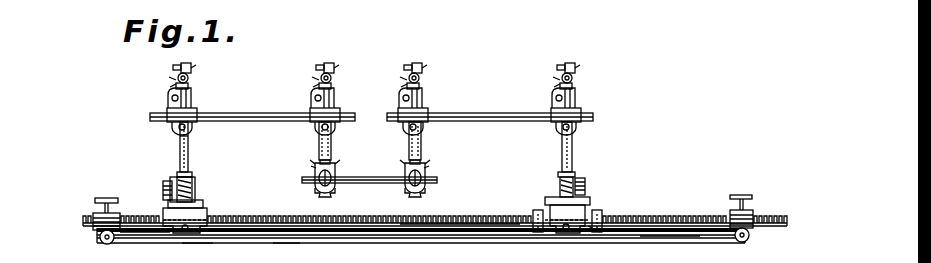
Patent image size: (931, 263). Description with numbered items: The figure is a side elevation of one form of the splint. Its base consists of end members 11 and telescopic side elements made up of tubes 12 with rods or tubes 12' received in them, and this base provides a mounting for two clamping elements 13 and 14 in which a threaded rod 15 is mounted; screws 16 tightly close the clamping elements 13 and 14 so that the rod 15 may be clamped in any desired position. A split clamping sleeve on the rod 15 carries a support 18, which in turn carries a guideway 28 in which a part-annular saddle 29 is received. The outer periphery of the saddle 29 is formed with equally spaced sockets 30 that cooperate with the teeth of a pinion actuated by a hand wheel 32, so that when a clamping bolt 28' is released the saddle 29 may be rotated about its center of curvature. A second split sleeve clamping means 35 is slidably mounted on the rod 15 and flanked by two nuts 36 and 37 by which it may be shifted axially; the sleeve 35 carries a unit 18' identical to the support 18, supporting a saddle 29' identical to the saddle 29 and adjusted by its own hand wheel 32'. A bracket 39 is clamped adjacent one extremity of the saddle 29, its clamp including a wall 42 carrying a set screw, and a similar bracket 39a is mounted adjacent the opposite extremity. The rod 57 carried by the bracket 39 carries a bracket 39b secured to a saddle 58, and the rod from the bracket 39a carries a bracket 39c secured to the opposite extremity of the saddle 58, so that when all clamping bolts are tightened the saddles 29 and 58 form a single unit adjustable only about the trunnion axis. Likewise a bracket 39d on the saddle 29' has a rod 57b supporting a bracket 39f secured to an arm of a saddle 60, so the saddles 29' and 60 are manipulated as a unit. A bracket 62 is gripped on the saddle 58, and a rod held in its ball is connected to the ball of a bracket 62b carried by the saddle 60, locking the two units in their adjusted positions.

The end members 11 is at (100, 242).
The tubes 12 is at (420, 247).
The rods or tubes 12' is at (670, 249).
The clamping element 13 is at (95, 212).
The clamping element 14 is at (203, 217).
The threaded rod 15 is at (487, 215).
The screws 16 is at (106, 197).
The support 18 is at (200, 202).
The unit 18' is at (587, 202).
The guideway 28 is at (205, 181).
The clamping bolt 28' is at (596, 166).
The part-annular saddle 29 is at (200, 147).
The saddle 29' is at (583, 147).
The sockets 30 is at (180, 141).
The hand wheel 32 is at (152, 188).
The hand wheel 32' is at (600, 178).
The split sleeve clamping means 35 is at (584, 231).
The nut 36 is at (537, 233).
The nut 37 is at (600, 232).
The bracket 39 is at (201, 79).
The bracket 39a is at (197, 253).
The bracket 39b is at (308, 74).
The bracket 39c is at (288, 253).
The bracket 39d is at (584, 86).
The bracket 39f is at (429, 77).
The wall 42 is at (368, 184).
The rod 57 is at (252, 108).
The rod 57b is at (490, 108).
The saddle 58 is at (331, 143).
The saddle 60 is at (421, 137).
The bracket 62 is at (306, 169).
The bracket 62b is at (434, 172).